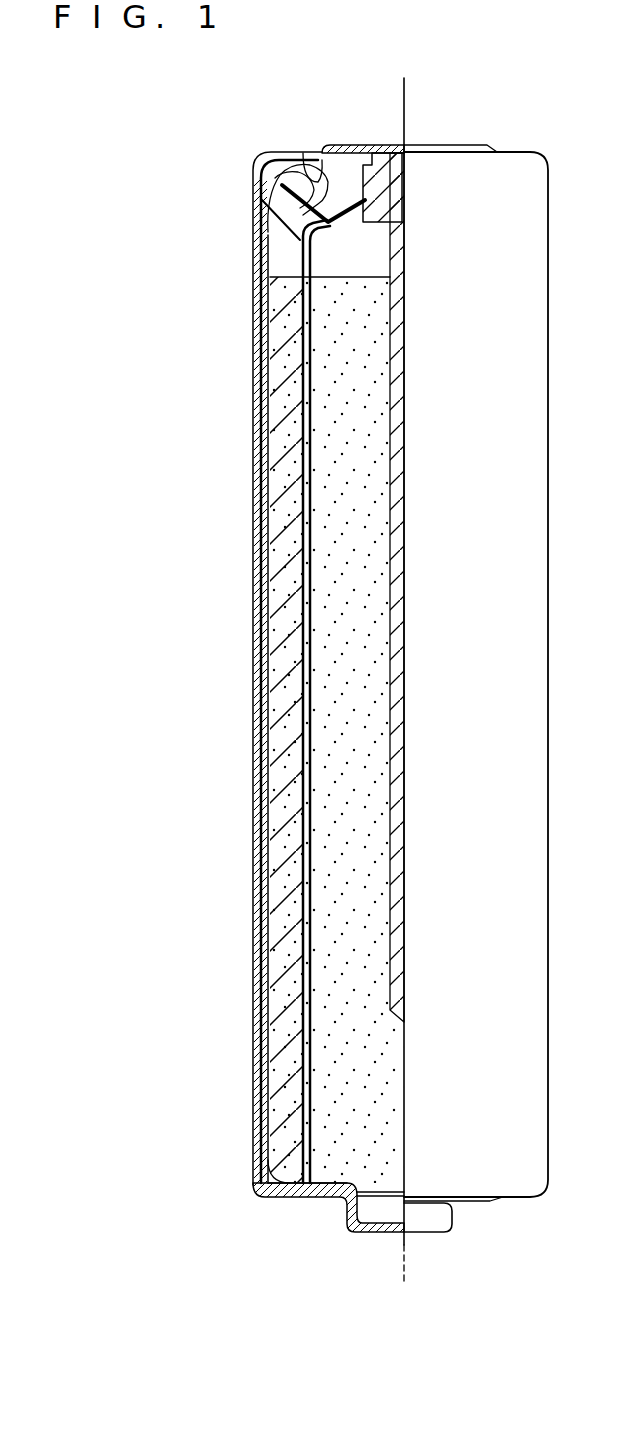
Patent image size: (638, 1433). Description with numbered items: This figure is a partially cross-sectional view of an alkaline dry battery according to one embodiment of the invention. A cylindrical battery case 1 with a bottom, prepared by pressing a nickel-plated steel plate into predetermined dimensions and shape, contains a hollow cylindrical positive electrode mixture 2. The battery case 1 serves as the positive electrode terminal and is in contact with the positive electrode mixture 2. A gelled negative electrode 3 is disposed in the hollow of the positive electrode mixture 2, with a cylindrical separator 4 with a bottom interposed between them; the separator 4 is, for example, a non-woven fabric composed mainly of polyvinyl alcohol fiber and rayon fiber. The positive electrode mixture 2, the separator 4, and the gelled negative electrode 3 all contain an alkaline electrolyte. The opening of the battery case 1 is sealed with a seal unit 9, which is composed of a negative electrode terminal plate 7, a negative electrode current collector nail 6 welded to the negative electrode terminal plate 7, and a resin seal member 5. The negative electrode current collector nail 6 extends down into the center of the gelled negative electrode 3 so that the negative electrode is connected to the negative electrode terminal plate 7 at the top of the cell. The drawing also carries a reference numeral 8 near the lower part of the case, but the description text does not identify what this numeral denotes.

The battery case 1 is at (262, 707).
The positive electrode mixture 2 is at (258, 990).
The gelled negative electrode 3 is at (347, 593).
The separator 4 is at (310, 807).
The resin seal member 5 is at (296, 228).
The negative electrode current collector nail 6 is at (398, 398).
The negative electrode terminal plate 7 is at (352, 145).
The bottom insulator 8 is at (257, 1116).
The seal unit 9 is at (193, 107).